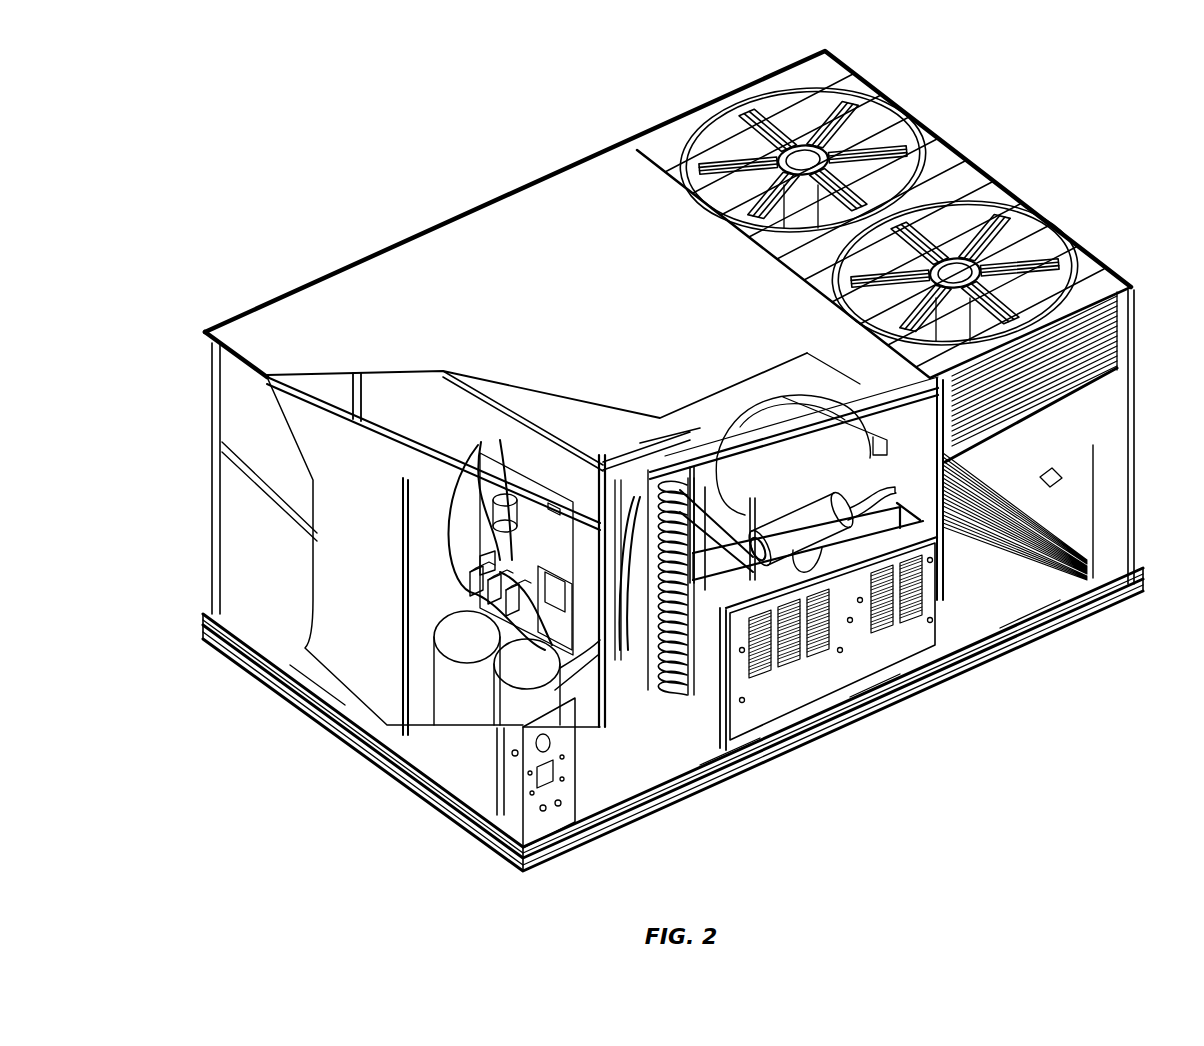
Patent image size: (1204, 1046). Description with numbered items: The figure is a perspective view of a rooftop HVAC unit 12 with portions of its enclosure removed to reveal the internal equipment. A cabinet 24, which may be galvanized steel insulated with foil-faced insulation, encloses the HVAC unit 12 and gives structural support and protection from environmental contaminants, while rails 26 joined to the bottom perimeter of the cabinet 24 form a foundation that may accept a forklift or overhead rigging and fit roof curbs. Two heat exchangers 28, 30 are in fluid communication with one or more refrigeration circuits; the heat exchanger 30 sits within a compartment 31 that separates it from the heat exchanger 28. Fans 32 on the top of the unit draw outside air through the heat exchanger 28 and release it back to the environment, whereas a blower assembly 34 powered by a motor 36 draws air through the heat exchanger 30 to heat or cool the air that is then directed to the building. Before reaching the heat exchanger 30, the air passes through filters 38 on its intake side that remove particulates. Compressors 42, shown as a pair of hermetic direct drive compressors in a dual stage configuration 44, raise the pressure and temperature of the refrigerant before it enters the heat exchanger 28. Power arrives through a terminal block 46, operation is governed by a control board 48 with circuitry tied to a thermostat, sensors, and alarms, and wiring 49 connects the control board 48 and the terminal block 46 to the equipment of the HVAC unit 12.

The HVAC unit 12 is at (406, 190).
The cabinet 24 is at (250, 578).
The rails 26 is at (283, 683).
The heat exchanger 28 is at (1134, 322).
The heat exchanger 30 is at (680, 687).
The compartment 31 is at (690, 470).
The fans 32 is at (962, 262).
The blower assembly 34 is at (847, 487).
The motor 36 is at (813, 517).
The filters 38 is at (670, 467).
The compressors 42 is at (437, 687).
The dual stage configuration 44 is at (433, 618).
The terminal block 46 is at (500, 563).
The control board 48 is at (535, 470).
The wiring 49 is at (650, 437).